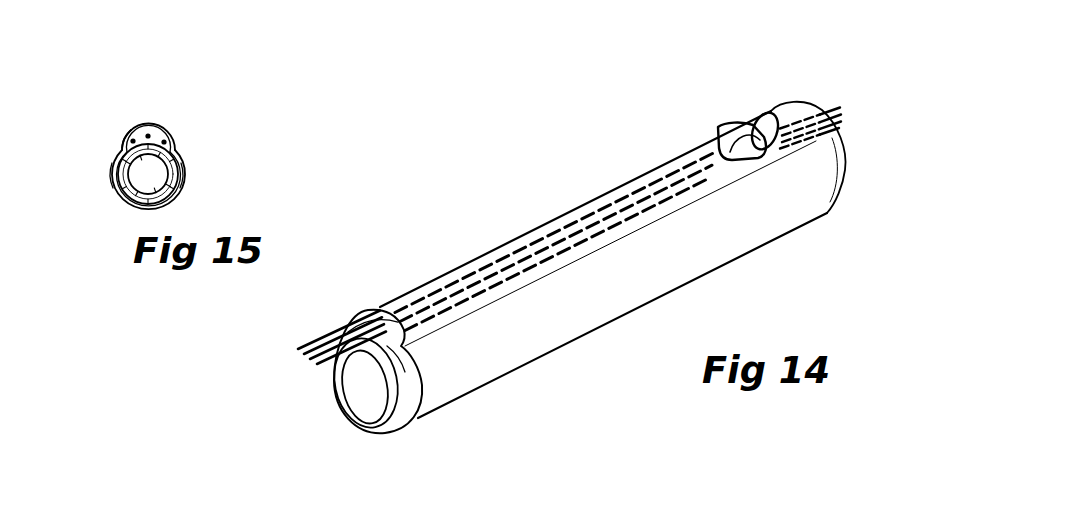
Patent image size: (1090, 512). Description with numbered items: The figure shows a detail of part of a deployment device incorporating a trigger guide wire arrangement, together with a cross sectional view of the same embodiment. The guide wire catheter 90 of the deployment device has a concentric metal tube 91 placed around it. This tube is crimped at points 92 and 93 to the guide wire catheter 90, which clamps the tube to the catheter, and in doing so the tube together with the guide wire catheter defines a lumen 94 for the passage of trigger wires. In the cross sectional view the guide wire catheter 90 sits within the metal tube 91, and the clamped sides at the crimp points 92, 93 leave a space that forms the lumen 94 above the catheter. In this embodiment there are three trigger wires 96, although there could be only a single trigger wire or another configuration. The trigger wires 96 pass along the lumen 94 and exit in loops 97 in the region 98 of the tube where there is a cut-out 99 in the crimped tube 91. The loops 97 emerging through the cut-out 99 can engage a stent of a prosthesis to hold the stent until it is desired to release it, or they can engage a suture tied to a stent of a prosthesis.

In FIG. 15, the guide wire catheter 90 is at (114, 186).
In FIG. 14, the guide wire catheter 90 is at (345, 412).
In FIG. 15, the concentric metal tube 91 is at (163, 121).
In FIG. 14, the concentric metal tube 91 is at (648, 274).
In FIG. 15, the crimp point 92 is at (100, 152).
In FIG. 15, the crimp point 93 is at (200, 152).
In FIG. 14, the crimp point 93 is at (544, 286).
In FIG. 15, the lumen 94 is at (125, 127).
In FIG. 14, the lumen 94 is at (405, 357).
In FIG. 15, the trigger wires 96 is at (178, 137).
In FIG. 14, the trigger wires 96 is at (330, 332).
In FIG. 14, the loops 97 is at (718, 127).
In FIG. 14, the region 98 is at (708, 102).
In FIG. 14, the cut-out 99 is at (762, 108).